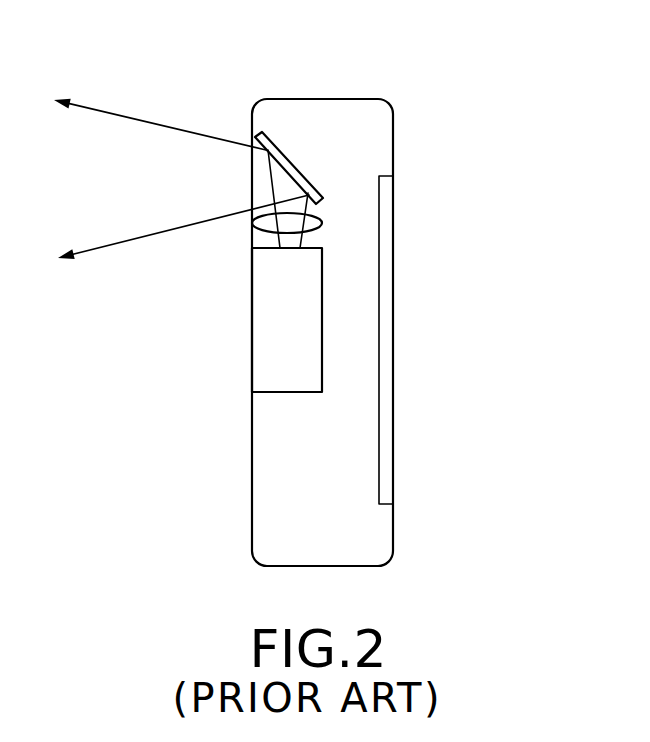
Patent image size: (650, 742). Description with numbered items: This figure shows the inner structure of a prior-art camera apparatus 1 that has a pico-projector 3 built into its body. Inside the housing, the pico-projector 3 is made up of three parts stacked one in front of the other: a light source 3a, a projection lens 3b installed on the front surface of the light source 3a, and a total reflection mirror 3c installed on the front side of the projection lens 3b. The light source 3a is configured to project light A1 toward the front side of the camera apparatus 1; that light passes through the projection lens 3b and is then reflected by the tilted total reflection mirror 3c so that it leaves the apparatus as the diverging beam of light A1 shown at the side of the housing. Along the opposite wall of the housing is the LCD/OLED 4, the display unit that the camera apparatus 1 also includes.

The camera apparatus 1 is at (355, 66).
The pico-projector 3 is at (391, 255).
The light source 3a is at (322, 282).
The projection lens 3b is at (322, 223).
The total reflection mirror 3c is at (298, 168).
The LCD/Organic Light Emitting Diode (LCD/OLED) 4 is at (387, 335).
The light A1 is at (145, 123).